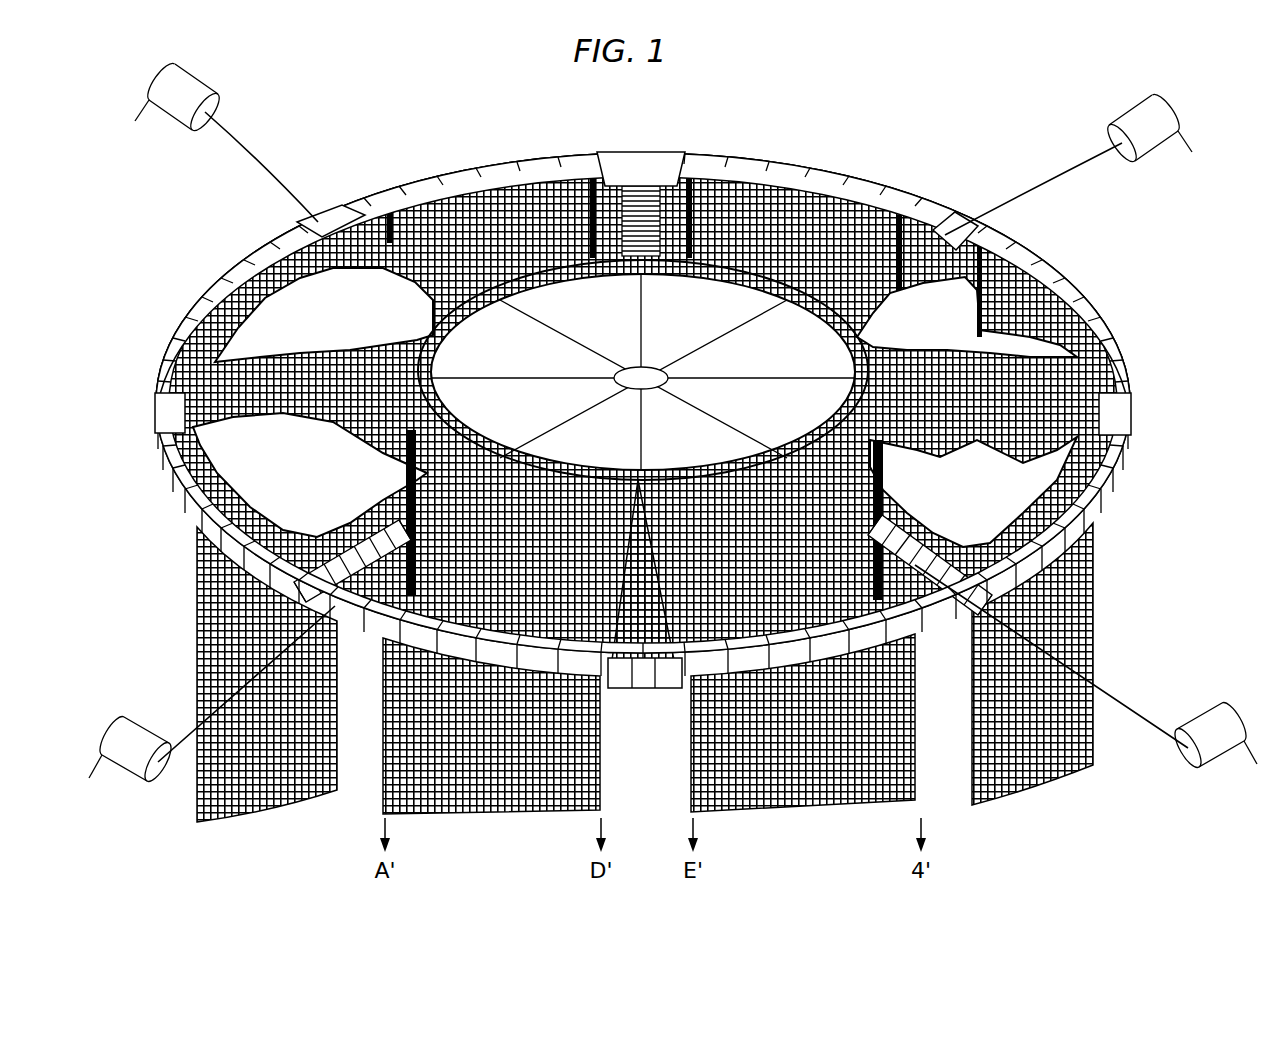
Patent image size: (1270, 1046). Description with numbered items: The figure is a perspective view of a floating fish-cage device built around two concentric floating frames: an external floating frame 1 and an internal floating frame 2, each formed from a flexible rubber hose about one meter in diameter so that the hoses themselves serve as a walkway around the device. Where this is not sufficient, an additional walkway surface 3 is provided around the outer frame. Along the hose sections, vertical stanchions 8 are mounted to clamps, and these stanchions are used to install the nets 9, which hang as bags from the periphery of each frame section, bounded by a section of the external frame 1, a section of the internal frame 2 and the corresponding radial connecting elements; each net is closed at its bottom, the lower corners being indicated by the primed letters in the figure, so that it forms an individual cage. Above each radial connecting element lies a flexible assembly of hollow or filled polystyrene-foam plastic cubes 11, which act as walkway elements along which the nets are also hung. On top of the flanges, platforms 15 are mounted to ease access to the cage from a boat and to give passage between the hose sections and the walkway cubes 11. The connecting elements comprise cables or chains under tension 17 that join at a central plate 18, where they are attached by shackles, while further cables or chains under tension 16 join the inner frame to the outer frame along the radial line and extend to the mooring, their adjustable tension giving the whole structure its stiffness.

The external floating frame 1 is at (1113, 338).
The internal floating frame 2 is at (643, 370).
The additional walkway surface 3 is at (1105, 500).
The vertical stanchion 8 is at (495, 440).
The net 9 is at (900, 770).
The walkway cubes 11 is at (632, 680).
The platform 15 is at (645, 690).
The cables or chains under tension 16 is at (1130, 725).
The cables or chains under tension 17 is at (635, 418).
The central plate 18 is at (640, 367).